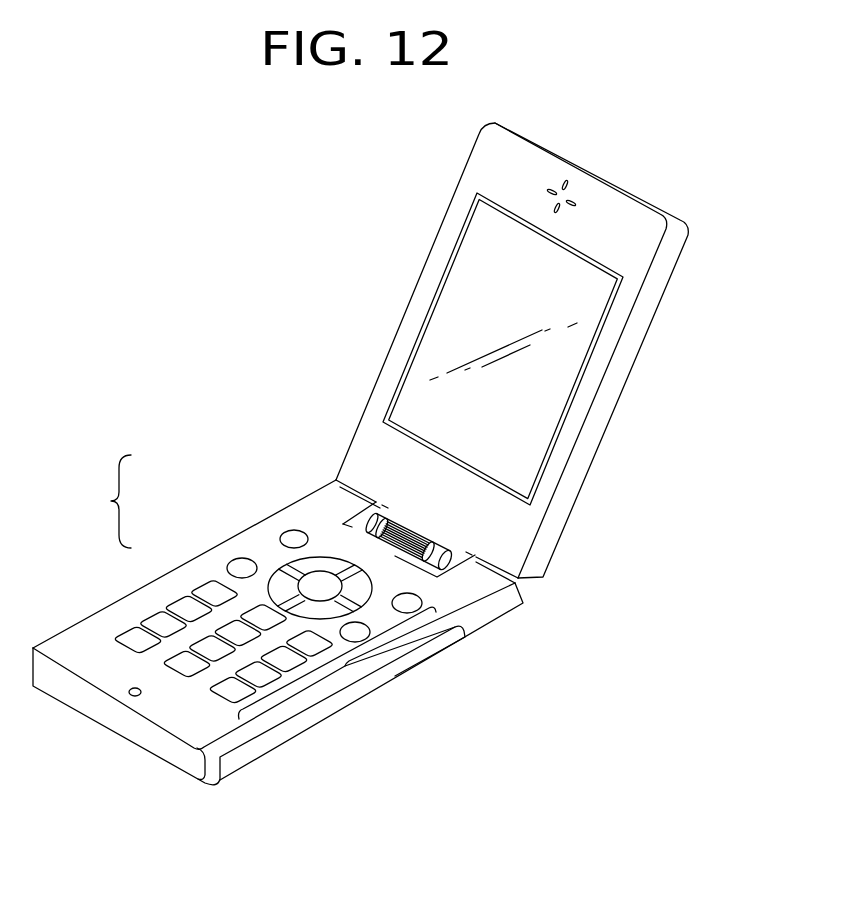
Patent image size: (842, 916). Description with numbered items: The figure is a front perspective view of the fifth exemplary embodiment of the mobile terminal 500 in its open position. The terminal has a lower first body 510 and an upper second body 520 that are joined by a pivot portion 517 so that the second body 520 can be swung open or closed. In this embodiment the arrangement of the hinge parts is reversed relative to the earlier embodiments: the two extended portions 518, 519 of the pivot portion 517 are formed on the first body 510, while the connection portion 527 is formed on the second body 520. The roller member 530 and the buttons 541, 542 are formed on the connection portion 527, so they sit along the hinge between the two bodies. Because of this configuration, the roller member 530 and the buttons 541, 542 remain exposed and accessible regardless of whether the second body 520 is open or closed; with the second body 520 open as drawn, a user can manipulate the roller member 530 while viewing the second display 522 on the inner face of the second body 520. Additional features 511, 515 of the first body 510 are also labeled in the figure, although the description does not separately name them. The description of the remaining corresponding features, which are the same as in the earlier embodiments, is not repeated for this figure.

The mobile terminal 500 is at (207, 443).
The first body 510 is at (486, 640).
The side edge of lower body 511 is at (348, 667).
The keypad face of lower body 515 is at (281, 733).
The pivot portion 517 is at (104, 501).
The extended portion 518 is at (437, 577).
The extended portion 519 is at (335, 502).
The second body 520 is at (650, 353).
The second display 522 is at (477, 270).
The connection portion 527 is at (343, 524).
The roller member 530 is at (400, 537).
The button 541 is at (336, 481).
The button 542 is at (440, 555).